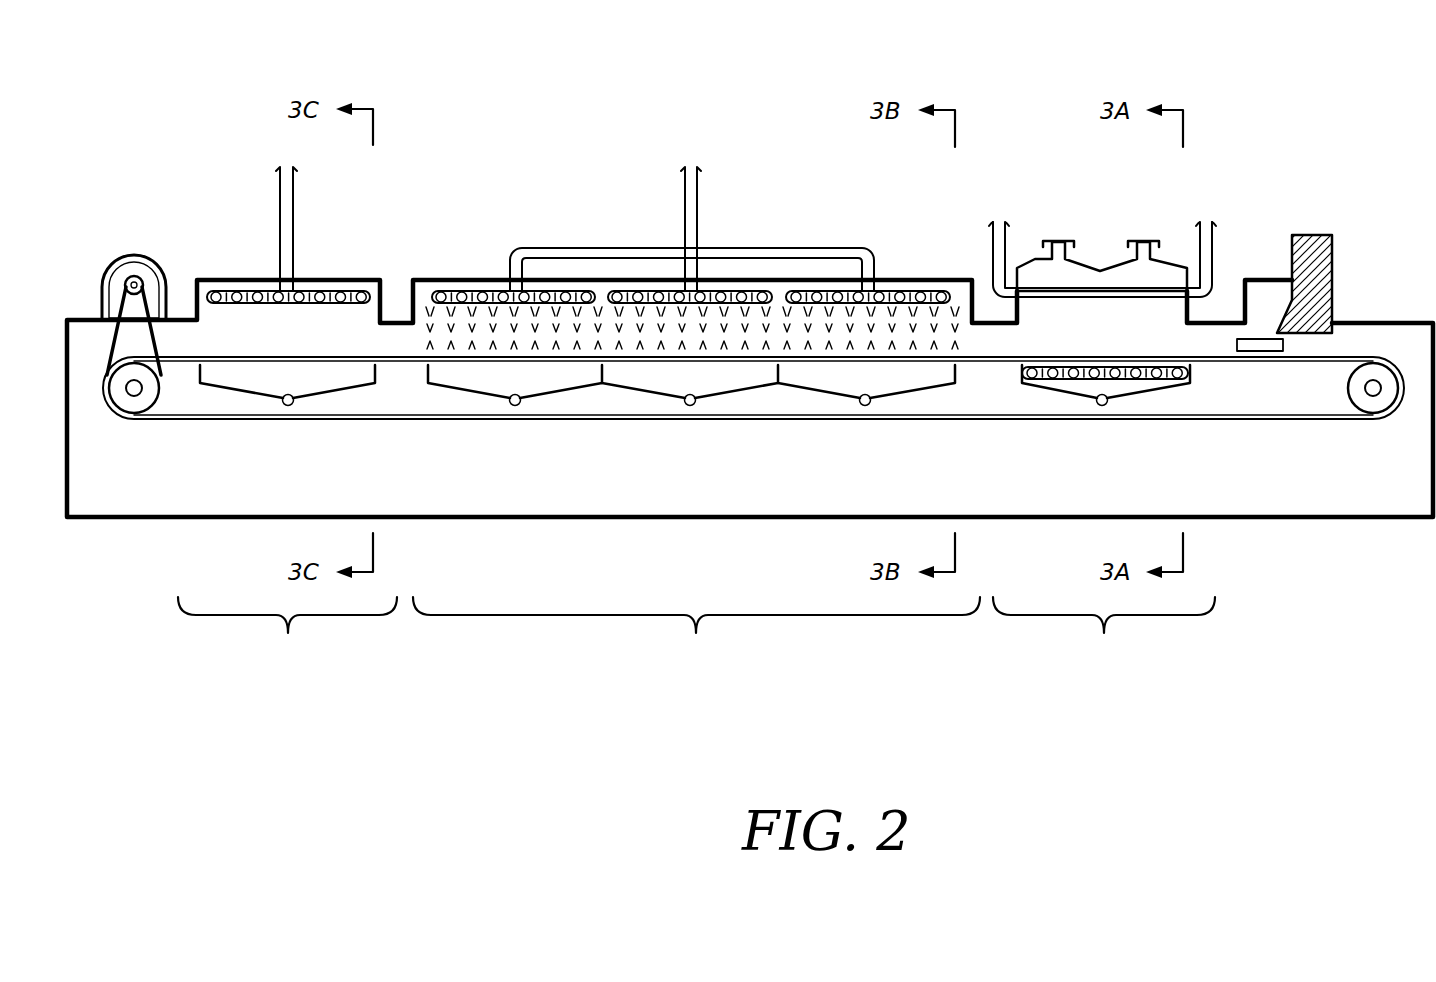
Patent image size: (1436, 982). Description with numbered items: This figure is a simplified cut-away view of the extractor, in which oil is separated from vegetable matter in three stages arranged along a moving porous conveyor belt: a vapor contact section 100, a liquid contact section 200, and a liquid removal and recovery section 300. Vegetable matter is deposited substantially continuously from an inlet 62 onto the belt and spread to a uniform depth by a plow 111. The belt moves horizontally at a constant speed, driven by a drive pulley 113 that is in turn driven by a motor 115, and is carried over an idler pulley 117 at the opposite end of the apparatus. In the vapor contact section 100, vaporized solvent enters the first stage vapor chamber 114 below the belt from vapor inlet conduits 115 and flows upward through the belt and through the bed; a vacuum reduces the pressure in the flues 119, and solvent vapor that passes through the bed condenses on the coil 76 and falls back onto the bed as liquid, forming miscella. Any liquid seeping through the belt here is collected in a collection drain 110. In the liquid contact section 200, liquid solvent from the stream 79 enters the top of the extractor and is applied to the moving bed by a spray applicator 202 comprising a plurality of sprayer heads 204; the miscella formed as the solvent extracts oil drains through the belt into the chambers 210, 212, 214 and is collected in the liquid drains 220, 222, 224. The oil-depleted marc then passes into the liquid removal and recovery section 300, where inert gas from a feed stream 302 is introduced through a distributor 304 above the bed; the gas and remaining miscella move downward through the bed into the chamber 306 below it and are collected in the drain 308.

The inlet 62 is at (1332, 292).
The coil 76 is at (1130, 291).
The stream 79 is at (683, 213).
The vapor contact section 100 is at (1104, 632).
The collection drain 110 is at (1100, 405).
The plow 111 is at (1237, 344).
The drive pulley 113 is at (136, 418).
The first stage vapor chamber 114 is at (1130, 390).
The motor 115 is at (140, 262).
The idler pulley 117 is at (1372, 419).
The flues 119 is at (1057, 241).
The liquid contact section 200 is at (696, 632).
The spray applicator 202 is at (775, 248).
The sprayer heads 204 is at (460, 290).
The chamber 210 is at (910, 378).
The chamber 212 is at (737, 378).
The chamber 214 is at (553, 378).
The liquid drain 220 is at (868, 405).
The liquid drain 222 is at (688, 405).
The liquid drain 224 is at (513, 405).
The liquid removal and recovery section 300 is at (287, 632).
The feed stream 302 is at (280, 215).
The distributor 304 is at (330, 290).
The chamber 306 is at (330, 378).
The drain 308 is at (285, 405).